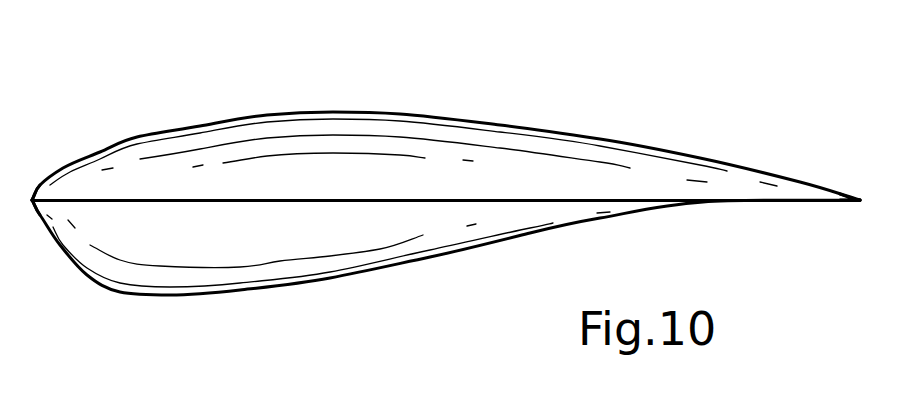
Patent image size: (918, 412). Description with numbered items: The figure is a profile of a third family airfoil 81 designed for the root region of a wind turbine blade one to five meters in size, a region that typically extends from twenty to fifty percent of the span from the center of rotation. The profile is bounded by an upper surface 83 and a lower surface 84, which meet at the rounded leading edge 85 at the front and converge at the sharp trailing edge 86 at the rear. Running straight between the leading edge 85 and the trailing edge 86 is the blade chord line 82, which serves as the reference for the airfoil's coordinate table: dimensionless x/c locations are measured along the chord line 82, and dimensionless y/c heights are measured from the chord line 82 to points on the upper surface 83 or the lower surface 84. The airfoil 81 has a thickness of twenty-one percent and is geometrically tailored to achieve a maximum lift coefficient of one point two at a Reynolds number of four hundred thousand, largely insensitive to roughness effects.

The third family airfoil 81 is at (541, 107).
The chord line 82 is at (262, 200).
The upper surface 83 is at (137, 137).
The lower surface 84 is at (126, 295).
The leading edge 85 is at (23, 135).
The trailing edge 86 is at (841, 198).